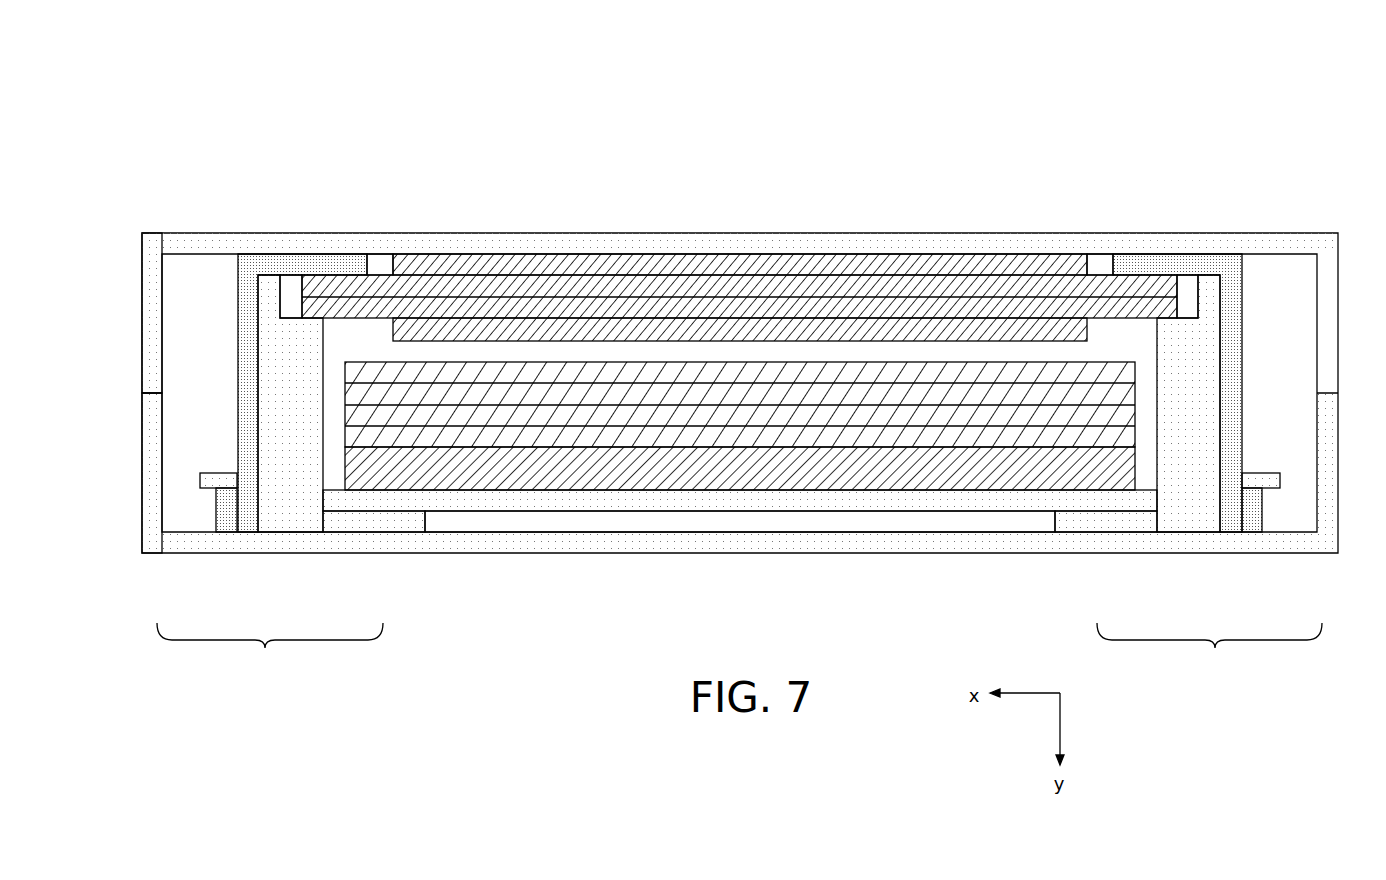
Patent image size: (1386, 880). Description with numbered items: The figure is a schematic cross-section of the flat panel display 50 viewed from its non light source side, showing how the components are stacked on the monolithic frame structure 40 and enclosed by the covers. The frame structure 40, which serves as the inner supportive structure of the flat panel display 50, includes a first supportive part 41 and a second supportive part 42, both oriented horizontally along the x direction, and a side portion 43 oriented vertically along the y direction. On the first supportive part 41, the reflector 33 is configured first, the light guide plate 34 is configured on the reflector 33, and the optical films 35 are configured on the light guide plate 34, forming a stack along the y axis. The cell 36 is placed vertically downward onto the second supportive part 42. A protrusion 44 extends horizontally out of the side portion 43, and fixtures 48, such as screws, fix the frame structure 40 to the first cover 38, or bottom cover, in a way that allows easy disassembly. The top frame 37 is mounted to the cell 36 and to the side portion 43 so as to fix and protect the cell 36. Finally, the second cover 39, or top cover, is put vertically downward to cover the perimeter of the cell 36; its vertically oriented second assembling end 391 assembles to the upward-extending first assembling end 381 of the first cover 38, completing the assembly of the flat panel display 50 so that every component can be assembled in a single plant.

The flat panel display 50 is at (1212, 107).
The reflector 33 is at (953, 505).
The light guide plate 34 is at (922, 478).
The optical films 35 is at (835, 435).
The cell 36 is at (885, 307).
The top frame 37 is at (262, 260).
The first cover 38 is at (1325, 452).
The second cover 39 is at (960, 242).
The first assembling end 381 is at (152, 452).
The second assembling end 391 is at (152, 362).
The frame structure 40 is at (739, 653).
The first supportive part 41 is at (381, 523).
The second supportive part 42 is at (297, 383).
The side portion 43 is at (268, 293).
The protrusion 44 is at (207, 488).
The fixtures 48 is at (228, 507).